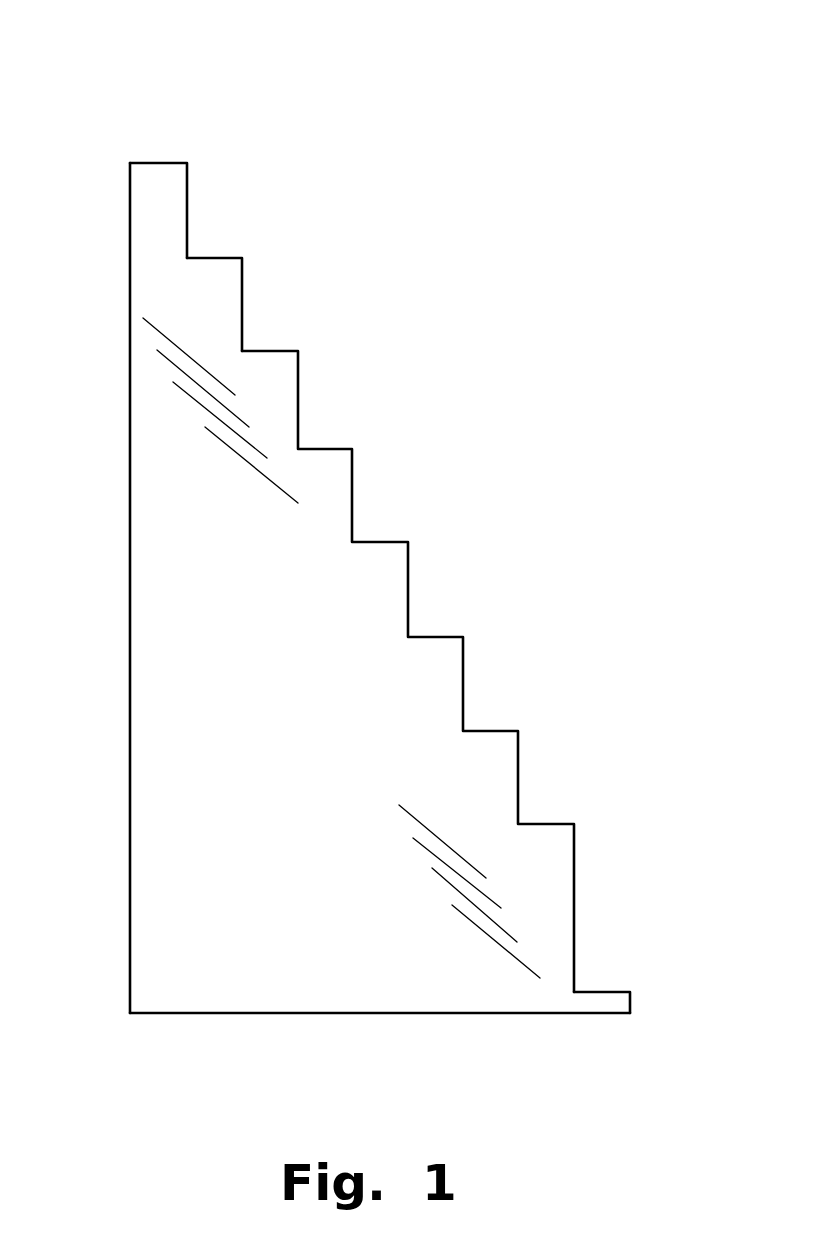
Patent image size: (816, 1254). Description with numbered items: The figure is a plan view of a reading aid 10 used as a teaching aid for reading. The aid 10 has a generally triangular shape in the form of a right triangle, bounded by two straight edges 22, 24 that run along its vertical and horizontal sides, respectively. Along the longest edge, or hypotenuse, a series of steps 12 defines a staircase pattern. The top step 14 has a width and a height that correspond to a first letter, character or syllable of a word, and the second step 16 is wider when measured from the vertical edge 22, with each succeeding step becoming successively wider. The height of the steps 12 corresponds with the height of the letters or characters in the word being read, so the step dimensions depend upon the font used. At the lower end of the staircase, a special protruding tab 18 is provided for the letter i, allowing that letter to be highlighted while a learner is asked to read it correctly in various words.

The reading aid 10 is at (375, 558).
The steps 12 is at (242, 310).
The top step 14 is at (167, 163).
The second step 16 is at (217, 257).
The protruding tab 18 is at (632, 993).
The straight edge 22 is at (130, 587).
The straight edge 24 is at (432, 1015).